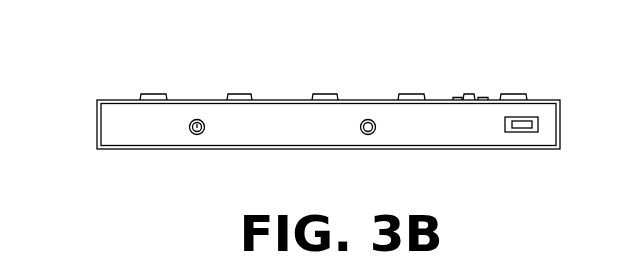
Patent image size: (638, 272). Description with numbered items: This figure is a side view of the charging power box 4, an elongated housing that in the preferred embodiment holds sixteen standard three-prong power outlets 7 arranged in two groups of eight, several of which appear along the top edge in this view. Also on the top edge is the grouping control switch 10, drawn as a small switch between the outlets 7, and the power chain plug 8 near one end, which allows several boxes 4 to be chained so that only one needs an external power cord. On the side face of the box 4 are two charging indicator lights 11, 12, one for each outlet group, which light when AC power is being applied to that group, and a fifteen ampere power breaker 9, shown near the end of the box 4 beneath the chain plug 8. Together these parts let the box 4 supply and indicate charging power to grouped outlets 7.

The charging power box 4 is at (119, 97).
The power outlets 7 is at (237, 93).
The power chain plug 8 is at (519, 86).
The power breaker 9 is at (523, 121).
The grouping control switch 10 is at (469, 84).
The charging indicator light 11 is at (197, 119).
The charging indicator light 12 is at (368, 119).